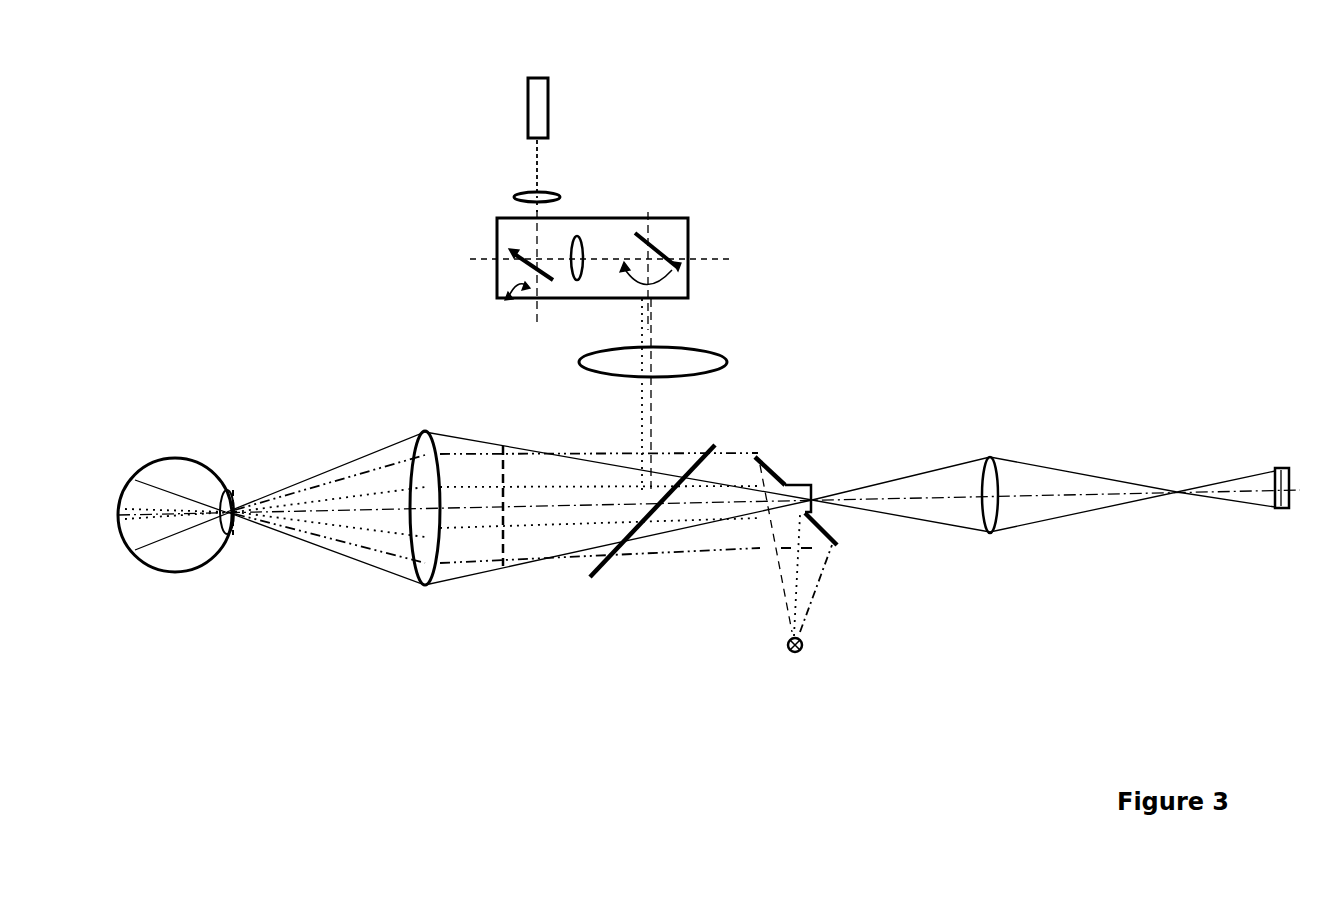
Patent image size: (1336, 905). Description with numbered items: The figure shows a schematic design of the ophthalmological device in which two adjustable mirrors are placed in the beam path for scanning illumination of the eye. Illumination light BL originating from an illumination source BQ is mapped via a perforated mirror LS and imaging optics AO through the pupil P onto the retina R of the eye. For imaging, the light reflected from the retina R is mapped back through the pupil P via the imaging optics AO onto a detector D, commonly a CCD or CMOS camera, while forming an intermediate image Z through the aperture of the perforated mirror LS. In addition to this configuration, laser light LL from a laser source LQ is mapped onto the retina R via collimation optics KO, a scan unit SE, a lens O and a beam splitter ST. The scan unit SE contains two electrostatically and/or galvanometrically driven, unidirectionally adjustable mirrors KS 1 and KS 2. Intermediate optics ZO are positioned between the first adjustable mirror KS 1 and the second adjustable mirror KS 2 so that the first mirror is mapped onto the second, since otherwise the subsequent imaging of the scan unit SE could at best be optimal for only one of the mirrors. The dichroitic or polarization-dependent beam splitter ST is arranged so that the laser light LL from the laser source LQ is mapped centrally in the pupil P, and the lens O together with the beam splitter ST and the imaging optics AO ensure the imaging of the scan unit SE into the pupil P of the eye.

The laser source LQ is at (533, 100).
The collimation optics KO is at (530, 192).
The laser light LL is at (540, 162).
The intermediate optics ZO is at (580, 235).
The first adjustable mirror KS 1 is at (527, 256).
The second adjustable mirror KS 2 is at (656, 232).
The scan unit SE is at (673, 255).
The lens O is at (700, 349).
The retina R is at (115, 528).
The pupil P is at (233, 540).
The imaging optics AO is at (432, 572).
The intermediate image Z is at (505, 560).
The beam splitter ST is at (612, 575).
The illumination light BL is at (797, 557).
The perforated mirror LS is at (840, 545).
The illumination source BQ is at (803, 645).
The detector D is at (1292, 510).